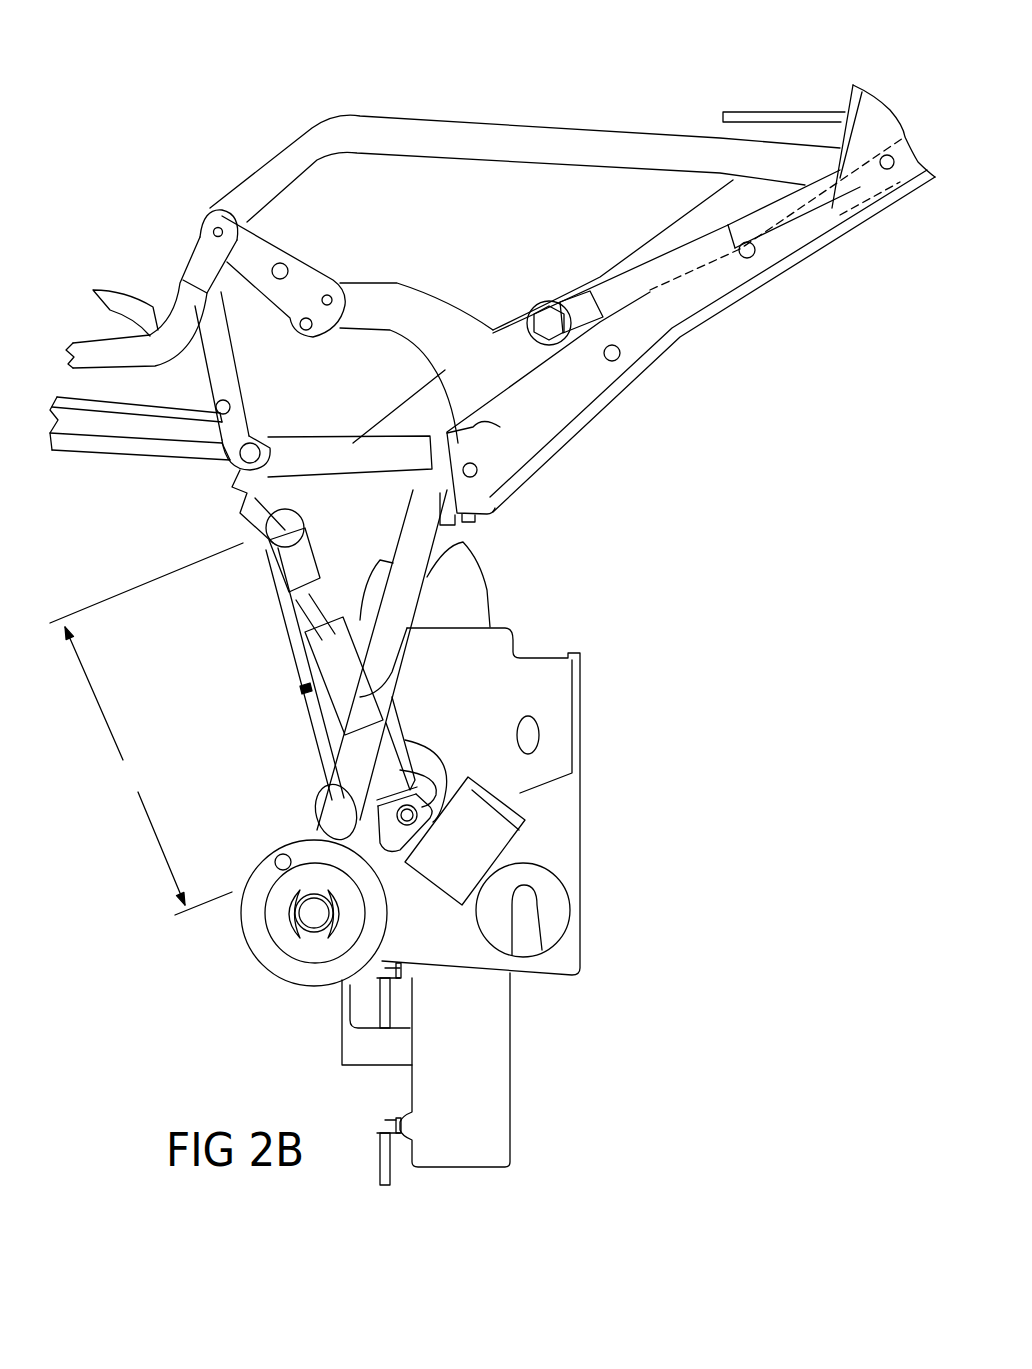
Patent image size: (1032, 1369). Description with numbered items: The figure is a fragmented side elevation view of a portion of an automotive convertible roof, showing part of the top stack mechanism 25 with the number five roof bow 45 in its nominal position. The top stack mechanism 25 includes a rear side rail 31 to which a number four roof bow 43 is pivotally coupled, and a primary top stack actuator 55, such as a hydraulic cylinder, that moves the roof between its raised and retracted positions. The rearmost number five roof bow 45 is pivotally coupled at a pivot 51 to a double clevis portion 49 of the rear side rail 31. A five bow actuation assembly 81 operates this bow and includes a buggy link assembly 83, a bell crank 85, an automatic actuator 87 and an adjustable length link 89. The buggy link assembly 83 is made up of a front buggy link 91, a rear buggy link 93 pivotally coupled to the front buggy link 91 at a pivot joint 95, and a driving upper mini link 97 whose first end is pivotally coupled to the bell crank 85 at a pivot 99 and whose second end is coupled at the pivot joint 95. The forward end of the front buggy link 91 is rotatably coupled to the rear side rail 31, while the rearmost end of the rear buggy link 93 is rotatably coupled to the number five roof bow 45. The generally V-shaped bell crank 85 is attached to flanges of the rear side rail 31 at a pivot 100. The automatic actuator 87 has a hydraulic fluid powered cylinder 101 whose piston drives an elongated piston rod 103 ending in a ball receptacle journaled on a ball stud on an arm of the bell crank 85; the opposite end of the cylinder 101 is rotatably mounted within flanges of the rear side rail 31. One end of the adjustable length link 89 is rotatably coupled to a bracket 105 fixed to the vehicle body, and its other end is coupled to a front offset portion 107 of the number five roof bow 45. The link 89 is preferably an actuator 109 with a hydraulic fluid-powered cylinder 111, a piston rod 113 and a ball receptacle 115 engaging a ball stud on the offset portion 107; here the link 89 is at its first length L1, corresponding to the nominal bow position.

The top stack mechanism 25 is at (212, 110).
The five bow actuation assembly 81 is at (337, 101).
The buggy link assembly 83 is at (181, 187).
The front buggy link 91 is at (463, 140).
The pivot joint 95 is at (213, 230).
The driving, upper mini link 97 is at (258, 248).
The pivot 99 is at (327, 297).
The rear buggy link 93 is at (112, 343).
The number four roof bow 43 is at (120, 297).
The pivot 51 is at (250, 457).
The number five roof bow 45 is at (145, 432).
The double clevis portion 49 is at (293, 457).
The bell crank 85 is at (398, 303).
The piston rod 103 is at (647, 280).
The automatic actuator 87 is at (628, 290).
The rear side rail 31 is at (717, 290).
The hydraulic fluid powered cylinder 101 is at (781, 217).
The pivot 100 is at (500, 427).
The front offset portion 107 is at (245, 518).
The ball receptacle 115 is at (273, 573).
The piston rod 113 is at (317, 610).
The actuator 109 is at (307, 688).
The adjustable length link 89 is at (323, 720).
The hydraulic fluid-powered cylinder 111 is at (333, 763).
The bracket 105 is at (563, 840).
The primary top stack actuator 55 is at (505, 1103).
The first length L1 is at (146, 729).